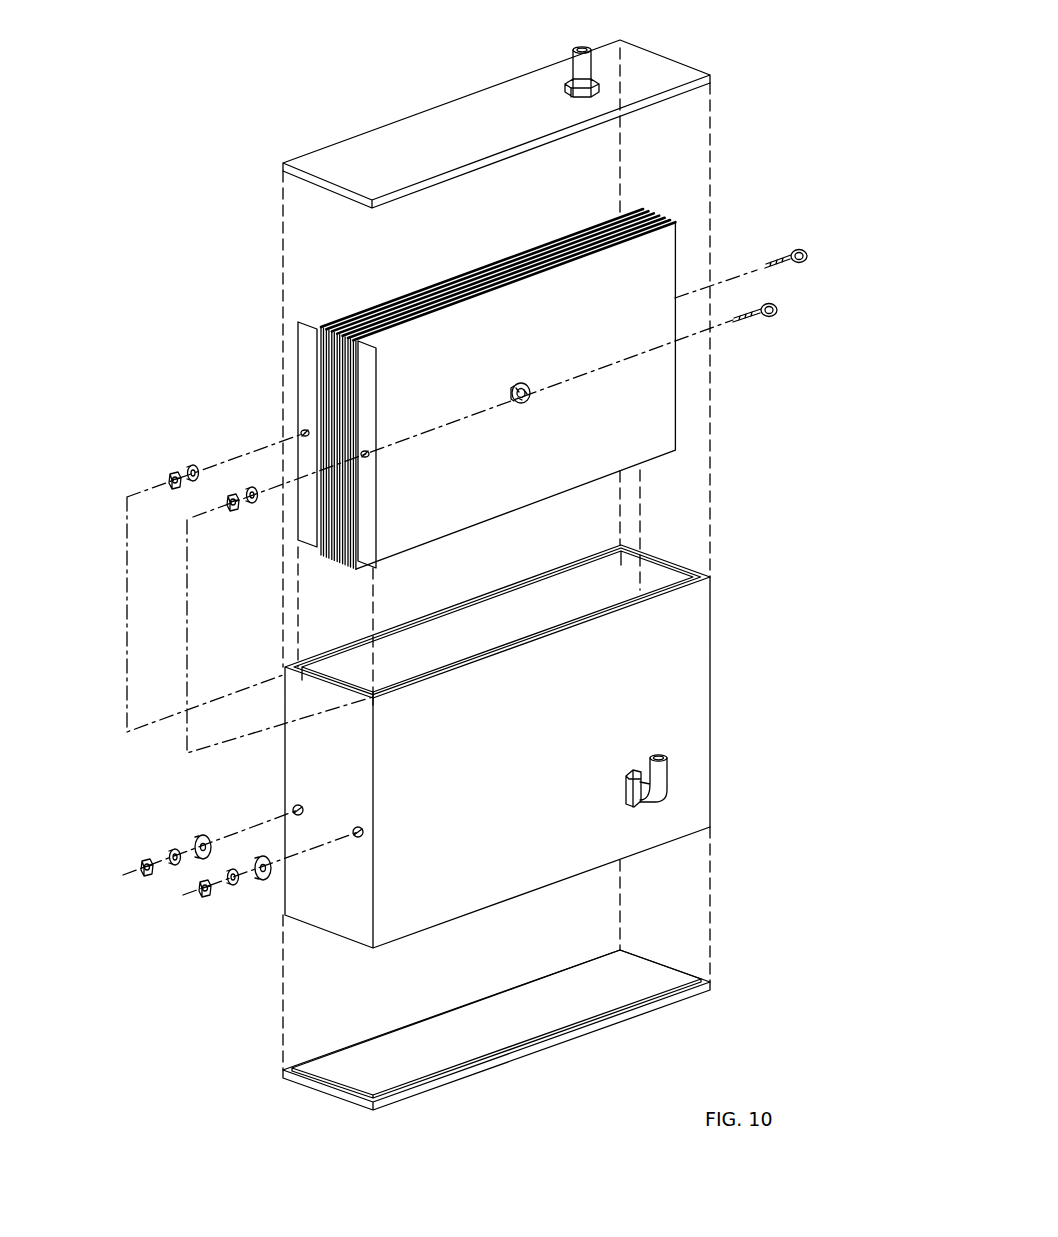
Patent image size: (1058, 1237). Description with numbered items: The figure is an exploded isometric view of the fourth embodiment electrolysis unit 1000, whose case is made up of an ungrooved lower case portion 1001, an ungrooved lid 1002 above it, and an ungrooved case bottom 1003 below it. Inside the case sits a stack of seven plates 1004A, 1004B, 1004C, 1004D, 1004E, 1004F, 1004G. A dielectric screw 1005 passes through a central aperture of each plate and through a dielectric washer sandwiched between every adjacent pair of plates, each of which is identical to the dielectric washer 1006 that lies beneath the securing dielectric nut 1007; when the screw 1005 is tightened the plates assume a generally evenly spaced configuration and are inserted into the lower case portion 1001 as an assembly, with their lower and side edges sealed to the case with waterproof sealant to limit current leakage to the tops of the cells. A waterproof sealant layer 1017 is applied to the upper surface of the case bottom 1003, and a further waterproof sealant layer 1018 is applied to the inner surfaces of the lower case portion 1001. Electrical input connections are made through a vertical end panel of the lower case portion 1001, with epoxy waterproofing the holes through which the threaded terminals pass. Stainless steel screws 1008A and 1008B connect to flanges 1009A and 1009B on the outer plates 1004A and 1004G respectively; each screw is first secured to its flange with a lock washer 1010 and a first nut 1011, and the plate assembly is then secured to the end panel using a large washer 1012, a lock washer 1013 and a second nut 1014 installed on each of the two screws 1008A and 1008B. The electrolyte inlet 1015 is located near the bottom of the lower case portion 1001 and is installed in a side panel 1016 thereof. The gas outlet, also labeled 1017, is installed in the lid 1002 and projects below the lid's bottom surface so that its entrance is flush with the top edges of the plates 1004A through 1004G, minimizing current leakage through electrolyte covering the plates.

The fourth embodiment electrolysis unit 1000 is at (316, 42).
The lower case portion 1001 is at (333, 905).
The lid 1002 is at (425, 143).
The case bottom 1003 is at (503, 1063).
The plate 1004A is at (395, 343).
The plate 1004B is at (357, 447).
The plate 1004C is at (347, 418).
The plate 1004D is at (338, 388).
The plate 1004E is at (332, 370).
The plate 1004F is at (327, 355).
The plate 1004G is at (333, 331).
The dielectric screw 1005 is at (528, 398).
The dielectric washer 1006 is at (510, 405).
The dielectric nut 1007 is at (512, 402).
The stainless steel screw 1008A is at (773, 313).
The stainless steel screw 1008B is at (803, 259).
The flange 1009A is at (367, 557).
The flange 1009B is at (306, 532).
The lock washer 1010 is at (188, 470).
The first nut 1011 is at (172, 478).
The large washer 1012 is at (200, 836).
The lock washer 1013 is at (173, 850).
The second nut 1014 is at (143, 862).
The electrolyte inlet 1015 is at (655, 790).
The side panel 1016 is at (667, 708).
The waterproof sealant layer 1017 is at (586, 70).
The waterproof sealant layer 1018 is at (603, 613).